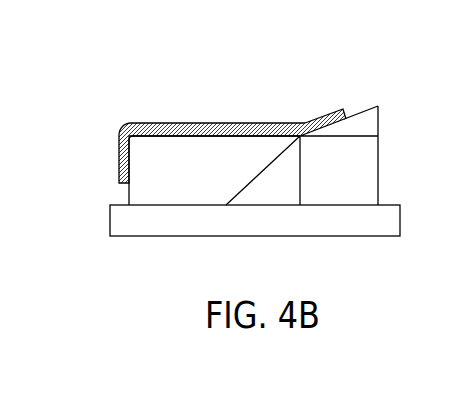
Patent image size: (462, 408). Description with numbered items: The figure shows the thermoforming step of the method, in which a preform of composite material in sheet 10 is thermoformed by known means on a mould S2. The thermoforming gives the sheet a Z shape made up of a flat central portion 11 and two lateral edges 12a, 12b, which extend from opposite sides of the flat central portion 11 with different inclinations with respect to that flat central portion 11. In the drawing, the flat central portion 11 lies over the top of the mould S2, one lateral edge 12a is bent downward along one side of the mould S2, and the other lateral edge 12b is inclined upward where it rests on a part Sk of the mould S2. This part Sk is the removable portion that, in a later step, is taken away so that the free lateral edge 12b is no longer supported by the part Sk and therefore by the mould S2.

The preform of composite material in sheet 10 is at (272, 103).
The flat central portion 11 is at (210, 123).
The lateral edge 12a is at (118, 155).
The free lateral edge 12b is at (325, 108).
The mould S2 is at (165, 185).
The part of the mould Sk is at (362, 173).